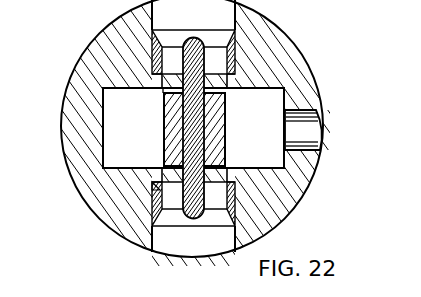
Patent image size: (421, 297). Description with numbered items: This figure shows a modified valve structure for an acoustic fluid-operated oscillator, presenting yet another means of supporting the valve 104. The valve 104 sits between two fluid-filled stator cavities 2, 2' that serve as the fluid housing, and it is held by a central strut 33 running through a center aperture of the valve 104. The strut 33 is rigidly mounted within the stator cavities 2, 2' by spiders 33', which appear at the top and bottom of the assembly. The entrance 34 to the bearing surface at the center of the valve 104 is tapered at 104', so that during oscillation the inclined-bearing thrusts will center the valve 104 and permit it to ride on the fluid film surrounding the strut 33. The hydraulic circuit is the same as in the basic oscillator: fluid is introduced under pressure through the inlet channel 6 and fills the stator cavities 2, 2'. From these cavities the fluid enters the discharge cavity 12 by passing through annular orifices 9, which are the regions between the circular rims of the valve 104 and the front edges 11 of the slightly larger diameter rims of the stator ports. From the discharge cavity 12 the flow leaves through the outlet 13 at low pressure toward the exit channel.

The stator cavity 2 is at (193, 44).
The stator cavity 2' is at (193, 210).
The inlet channel 6 is at (70, 110).
The annular orifice 9 is at (165, 90).
The front edge 11 is at (153, 183).
The discharge cavity 12 is at (193, 128).
The outlet 13 is at (289, 131).
The central strut 33 is at (210, 135).
The spider 33' is at (210, 135).
The entrance 34 is at (186, 80).
The valve 104 is at (228, 129).
The taper 104' is at (208, 135).